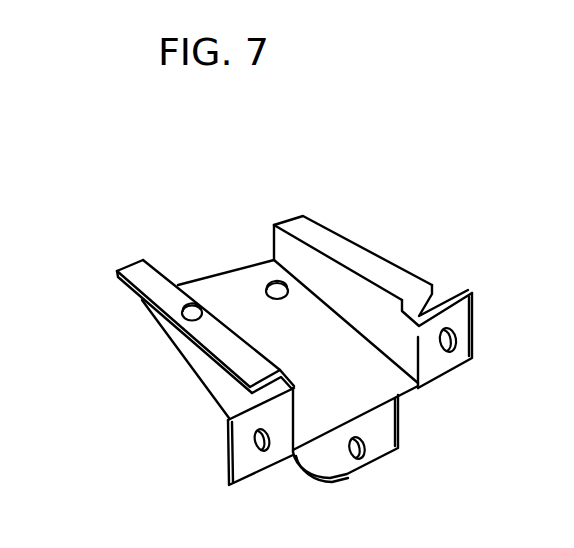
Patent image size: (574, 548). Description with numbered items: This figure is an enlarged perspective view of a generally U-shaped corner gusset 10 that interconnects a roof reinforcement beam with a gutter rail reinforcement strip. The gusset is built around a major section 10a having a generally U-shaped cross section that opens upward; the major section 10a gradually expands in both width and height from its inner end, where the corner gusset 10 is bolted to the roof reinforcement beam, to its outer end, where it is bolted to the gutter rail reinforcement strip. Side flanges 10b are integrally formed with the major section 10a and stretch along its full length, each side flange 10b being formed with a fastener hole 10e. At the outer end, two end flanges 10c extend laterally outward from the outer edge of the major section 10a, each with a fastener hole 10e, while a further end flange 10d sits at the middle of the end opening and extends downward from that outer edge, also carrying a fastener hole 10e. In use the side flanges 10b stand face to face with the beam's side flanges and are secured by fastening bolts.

The corner gusset 10 is at (370, 240).
The major section 10a is at (182, 349).
The side flange 10b is at (117, 271).
The end flange 10c is at (253, 467).
The end flange 10d is at (343, 476).
The fastener hole 10e is at (273, 284).